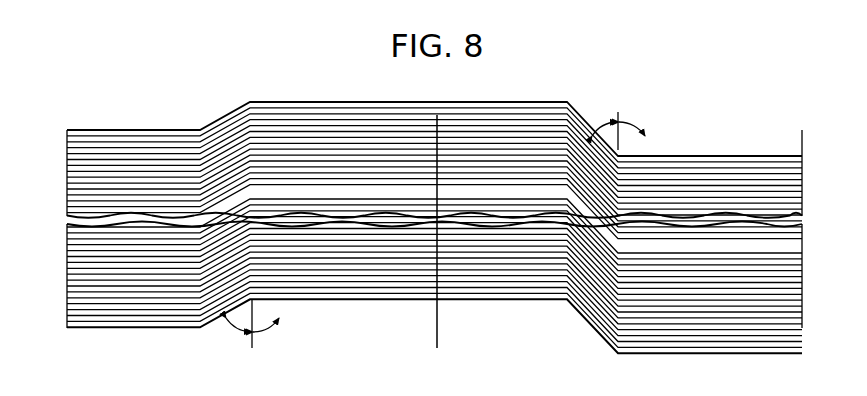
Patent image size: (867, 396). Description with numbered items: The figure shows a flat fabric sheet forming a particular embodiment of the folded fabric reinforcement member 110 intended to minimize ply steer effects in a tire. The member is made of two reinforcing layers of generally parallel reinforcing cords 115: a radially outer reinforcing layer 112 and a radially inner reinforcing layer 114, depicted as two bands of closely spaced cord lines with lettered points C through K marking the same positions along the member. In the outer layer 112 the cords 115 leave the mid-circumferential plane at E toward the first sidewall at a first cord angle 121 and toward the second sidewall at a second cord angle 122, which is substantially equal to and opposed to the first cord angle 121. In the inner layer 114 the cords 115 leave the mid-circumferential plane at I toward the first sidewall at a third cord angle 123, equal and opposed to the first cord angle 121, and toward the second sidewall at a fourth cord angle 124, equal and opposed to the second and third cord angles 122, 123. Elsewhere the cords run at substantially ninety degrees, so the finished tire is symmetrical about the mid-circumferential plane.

The folded fabric reinforcement member 110 is at (723, 96).
The radially outer reinforcing layer 112 is at (150, 316).
The radially inner reinforcing layer 114 is at (705, 310).
The reinforcing cords 115 is at (372, 143).
The first cord angle 121 is at (226, 318).
The second cord angle 122 is at (279, 318).
The third cord angle 123 is at (645, 136).
The fourth cord angle 124 is at (592, 136).